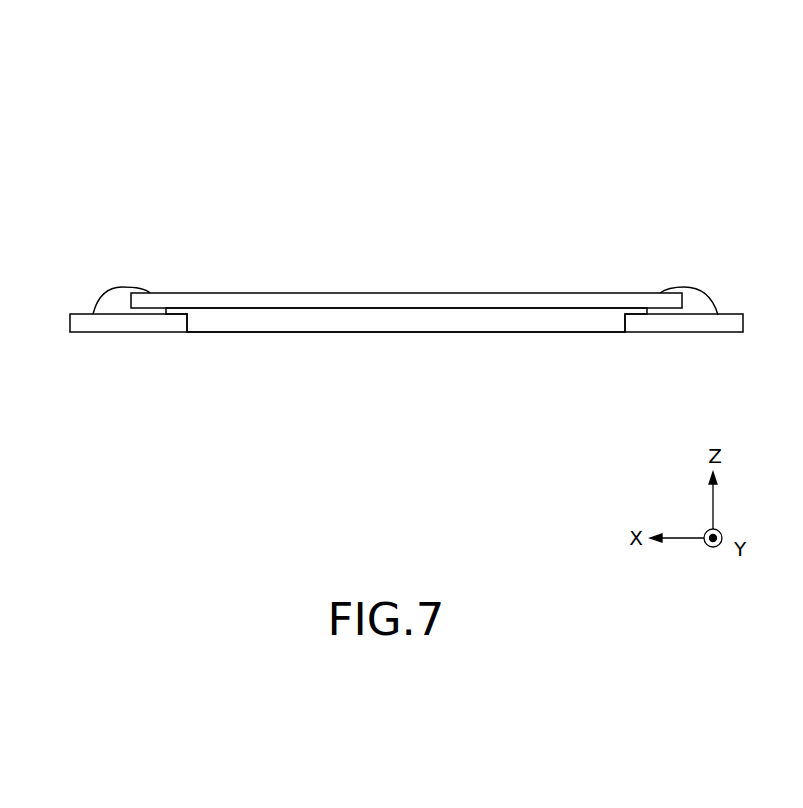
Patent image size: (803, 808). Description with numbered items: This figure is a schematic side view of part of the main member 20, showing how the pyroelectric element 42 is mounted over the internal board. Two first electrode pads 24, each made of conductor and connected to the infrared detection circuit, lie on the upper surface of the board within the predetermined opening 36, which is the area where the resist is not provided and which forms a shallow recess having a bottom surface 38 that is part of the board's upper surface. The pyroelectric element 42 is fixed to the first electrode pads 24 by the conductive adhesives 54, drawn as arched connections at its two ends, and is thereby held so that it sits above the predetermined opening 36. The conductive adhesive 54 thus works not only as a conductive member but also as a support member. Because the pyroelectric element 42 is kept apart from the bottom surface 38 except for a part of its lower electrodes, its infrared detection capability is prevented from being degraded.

The light emitting device 20 is at (47, 129).
The first electrode pad 24 is at (87, 313).
The predetermined opening 36 is at (265, 324).
The bottom surface 38 is at (333, 331).
The pyroelectric element 42 is at (450, 294).
The conductive adhesive 54 is at (130, 288).